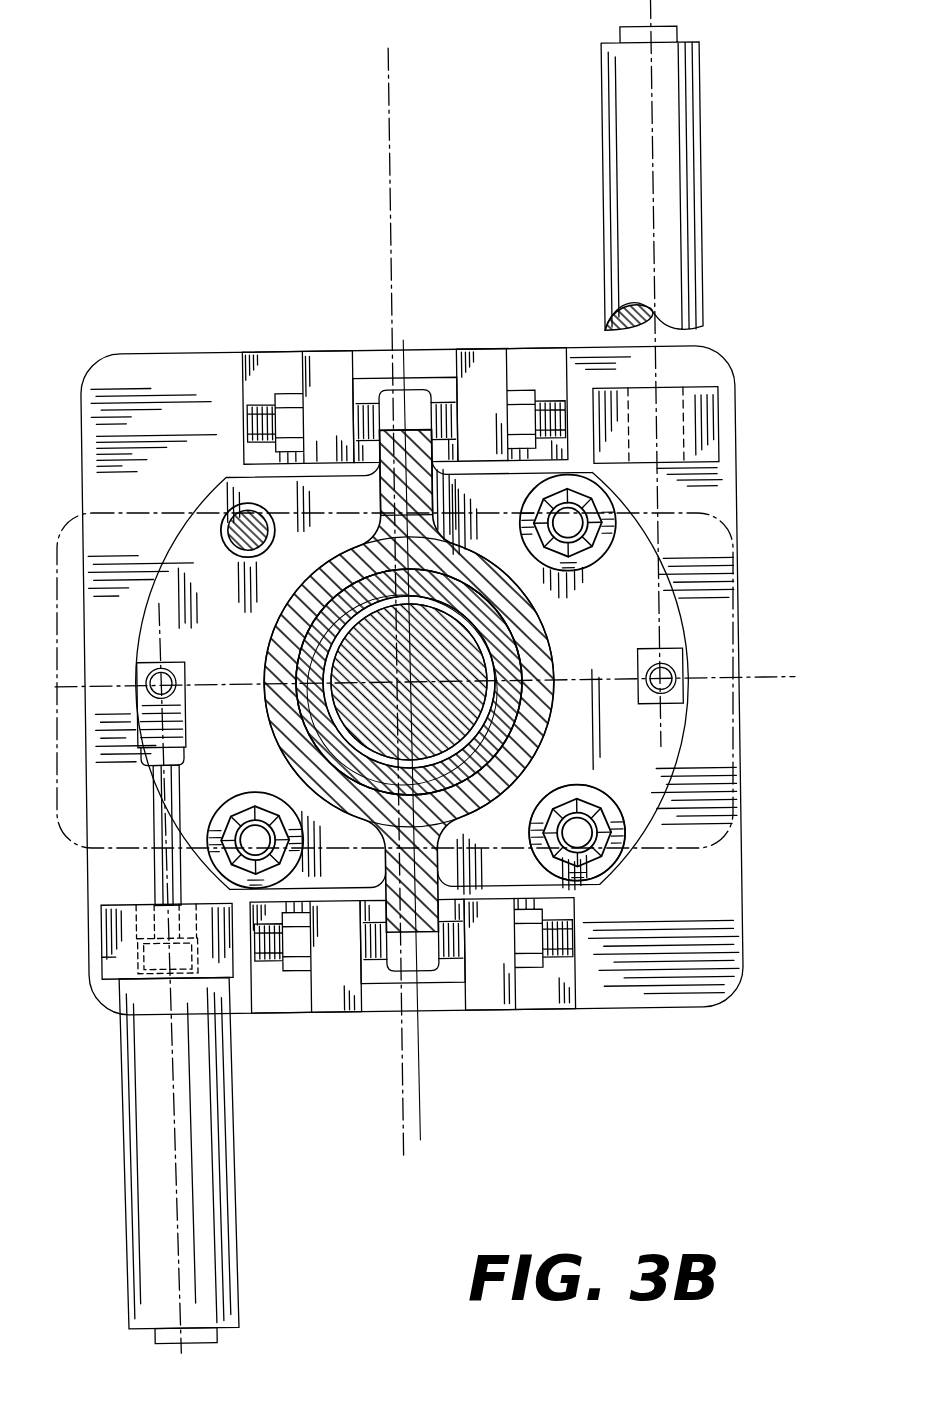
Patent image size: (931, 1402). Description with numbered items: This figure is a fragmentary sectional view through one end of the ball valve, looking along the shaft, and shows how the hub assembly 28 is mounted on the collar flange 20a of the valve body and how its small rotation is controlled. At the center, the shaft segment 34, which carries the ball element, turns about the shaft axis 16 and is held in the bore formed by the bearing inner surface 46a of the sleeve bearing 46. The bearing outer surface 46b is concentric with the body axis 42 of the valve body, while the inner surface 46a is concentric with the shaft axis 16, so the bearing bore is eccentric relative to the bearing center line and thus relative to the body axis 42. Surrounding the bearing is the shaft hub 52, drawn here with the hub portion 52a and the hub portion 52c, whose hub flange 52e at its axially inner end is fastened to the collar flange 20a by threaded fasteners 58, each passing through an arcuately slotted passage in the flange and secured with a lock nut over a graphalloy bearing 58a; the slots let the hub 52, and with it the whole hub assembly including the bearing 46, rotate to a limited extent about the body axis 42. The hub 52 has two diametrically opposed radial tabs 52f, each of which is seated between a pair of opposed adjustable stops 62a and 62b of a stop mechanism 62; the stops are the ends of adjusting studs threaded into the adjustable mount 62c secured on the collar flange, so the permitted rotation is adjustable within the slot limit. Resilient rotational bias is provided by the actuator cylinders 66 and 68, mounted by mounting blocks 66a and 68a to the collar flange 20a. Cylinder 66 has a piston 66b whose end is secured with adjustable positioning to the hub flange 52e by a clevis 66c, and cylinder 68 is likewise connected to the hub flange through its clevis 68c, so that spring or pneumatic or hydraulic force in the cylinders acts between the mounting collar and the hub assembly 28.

The collar flange 20a is at (202, 385).
The stop mechanism 62 is at (505, 352).
The adjustable stop 62a is at (455, 436).
The adjustable stop 62b is at (369, 380).
The adjustable mount 62c is at (640, 381).
The shaft hub 52 is at (260, 500).
The hub flange 52a is at (511, 620).
The hub neck 52c is at (383, 490).
The hub flange 52e is at (239, 660).
The radial tab 52f is at (419, 397).
The threaded fastener 58 is at (236, 502).
The graphalloy bearing 58a is at (596, 884).
The actuator cylinder 68 is at (696, 241).
The mounting block 68a is at (700, 435).
The clevis 68c is at (677, 667).
The hub assembly 28 is at (640, 530).
The shaft segment 34 is at (291, 617).
The shaft axis 16 is at (298, 760).
The body axis 42 is at (491, 650).
The sleeve bearing 46 is at (517, 733).
The bearing inner surface 46a is at (531, 662).
The bearing outer surface 46b is at (545, 760).
The actuator cylinder 66 is at (225, 1175).
The mounting block 66a is at (110, 953).
The piston 66b is at (155, 876).
The clevis 66c is at (150, 695).